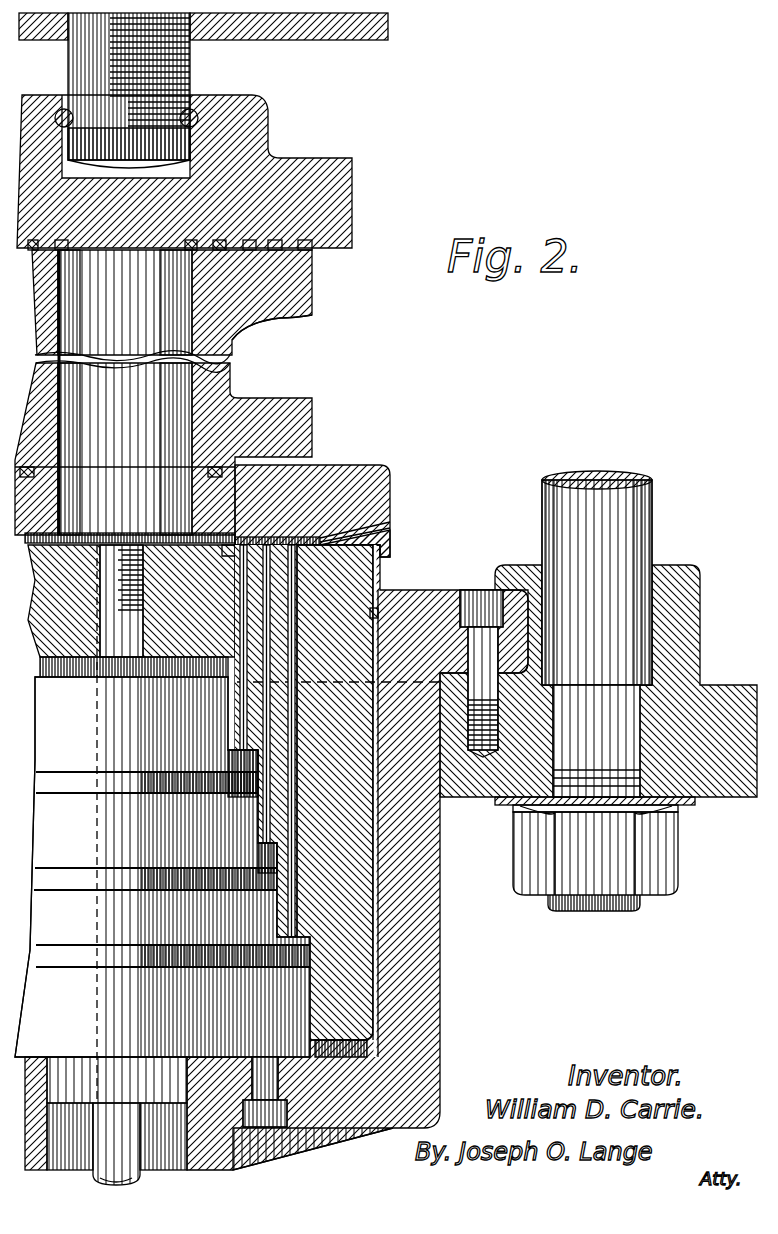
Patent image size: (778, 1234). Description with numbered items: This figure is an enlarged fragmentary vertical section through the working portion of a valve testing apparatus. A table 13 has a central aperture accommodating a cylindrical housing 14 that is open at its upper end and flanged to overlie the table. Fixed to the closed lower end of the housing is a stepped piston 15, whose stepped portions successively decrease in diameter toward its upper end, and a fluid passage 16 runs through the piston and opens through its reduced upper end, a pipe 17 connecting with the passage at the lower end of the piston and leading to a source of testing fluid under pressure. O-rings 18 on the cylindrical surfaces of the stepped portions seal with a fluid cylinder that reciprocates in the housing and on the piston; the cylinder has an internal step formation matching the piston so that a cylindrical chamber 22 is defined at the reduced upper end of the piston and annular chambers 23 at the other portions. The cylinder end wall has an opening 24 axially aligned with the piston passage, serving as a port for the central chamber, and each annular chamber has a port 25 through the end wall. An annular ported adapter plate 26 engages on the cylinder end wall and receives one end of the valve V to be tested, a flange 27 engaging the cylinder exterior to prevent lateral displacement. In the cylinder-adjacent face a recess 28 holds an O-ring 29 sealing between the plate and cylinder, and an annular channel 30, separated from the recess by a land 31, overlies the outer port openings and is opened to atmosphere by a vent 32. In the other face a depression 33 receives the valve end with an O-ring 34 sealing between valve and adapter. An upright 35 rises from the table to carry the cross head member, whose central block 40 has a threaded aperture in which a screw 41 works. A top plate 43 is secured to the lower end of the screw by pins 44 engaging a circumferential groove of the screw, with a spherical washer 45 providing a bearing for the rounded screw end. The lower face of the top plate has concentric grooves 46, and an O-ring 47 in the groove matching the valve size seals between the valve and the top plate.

The table 13 is at (470, 795).
The cylindrical housing 14 is at (440, 966).
The stepped piston 15 is at (290, 1040).
The fluid passage 16 is at (93, 842).
The pipe 17 is at (125, 1152).
The O-rings 18 is at (245, 770).
The chamber 22 is at (160, 657).
The annular chambers 23 is at (285, 935).
The opening 24 is at (93, 631).
The port 25 is at (291, 665).
The adapter plate 26 is at (330, 466).
The flange 27 is at (392, 550).
The recess 28 is at (200, 538).
The O-ring 29 is at (215, 546).
The annular channel 30 is at (305, 548).
The land 31 is at (226, 556).
The vent 32 is at (330, 536).
The depression 33 is at (215, 470).
The O-ring 34 is at (30, 474).
The upright 35 is at (545, 514).
The block 40 is at (388, 30).
The screw 41 is at (190, 60).
The top plate 43 is at (308, 165).
The pins 44 is at (126, 120).
The spherical washer 45 is at (118, 152).
The concentric grooves 46 is at (55, 252).
The O-ring 47 is at (190, 252).
The valve V is at (293, 324).